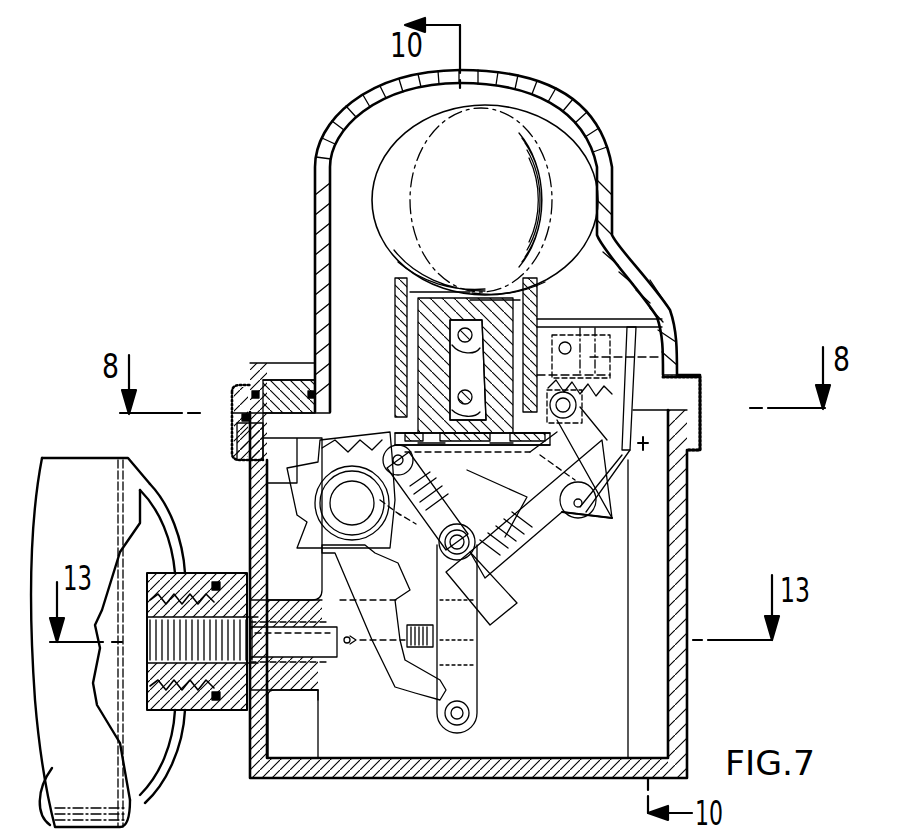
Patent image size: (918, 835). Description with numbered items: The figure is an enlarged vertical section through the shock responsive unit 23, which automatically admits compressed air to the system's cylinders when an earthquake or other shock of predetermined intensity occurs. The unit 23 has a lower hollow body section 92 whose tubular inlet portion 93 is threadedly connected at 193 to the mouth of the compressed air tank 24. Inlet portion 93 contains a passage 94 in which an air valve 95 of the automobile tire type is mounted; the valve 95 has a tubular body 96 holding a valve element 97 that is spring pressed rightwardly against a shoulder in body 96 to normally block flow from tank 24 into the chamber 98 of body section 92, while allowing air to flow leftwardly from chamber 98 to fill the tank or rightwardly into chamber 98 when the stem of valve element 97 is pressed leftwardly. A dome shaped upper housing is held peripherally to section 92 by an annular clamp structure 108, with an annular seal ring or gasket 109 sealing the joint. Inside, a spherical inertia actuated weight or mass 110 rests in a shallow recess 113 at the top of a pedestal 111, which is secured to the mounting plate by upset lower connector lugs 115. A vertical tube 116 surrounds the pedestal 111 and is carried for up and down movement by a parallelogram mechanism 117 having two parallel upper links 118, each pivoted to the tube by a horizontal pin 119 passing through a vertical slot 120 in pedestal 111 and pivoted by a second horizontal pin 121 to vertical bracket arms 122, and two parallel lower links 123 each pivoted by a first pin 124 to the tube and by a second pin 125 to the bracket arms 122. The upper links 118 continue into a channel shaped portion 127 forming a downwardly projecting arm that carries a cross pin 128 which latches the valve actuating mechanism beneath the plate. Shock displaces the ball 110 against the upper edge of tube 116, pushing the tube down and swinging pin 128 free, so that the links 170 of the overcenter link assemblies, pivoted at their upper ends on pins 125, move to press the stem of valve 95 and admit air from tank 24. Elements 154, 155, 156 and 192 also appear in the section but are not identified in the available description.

The shock responsive unit 23 is at (650, 233).
The compressed air tank 24 is at (66, 460).
The lower hollow body section 92 is at (678, 527).
The tubular inlet portion 93 is at (210, 575).
The passage 94 is at (292, 665).
The air valve 95 is at (302, 665).
The tubular body 96 is at (300, 620).
The valve element 97 is at (348, 645).
The chamber 98 is at (667, 698).
The annular clamp structure 108 is at (235, 400).
The annular seal ring or gasket 109 is at (245, 420).
The inertia actuated weight or mass 110 is at (380, 186).
The pedestal 111 is at (442, 296).
The shallow recess 113 is at (503, 296).
The lower connector lugs 115 is at (490, 445).
The vertical tube 116 is at (543, 302).
The parallelogram mechanism 117 is at (630, 310).
The upper links 118 is at (552, 330).
The horizontal pin 119 is at (415, 325).
The vertical slot 120 is at (425, 340).
The second parallel horizontal pin 121 is at (575, 348).
The vertical bracket arms 122 is at (660, 355).
The lower links 123 is at (455, 378).
The first pin 124 is at (458, 400).
The second pin 125 is at (585, 410).
The channel shaped portion 127 is at (640, 390).
The cross pin 128 is at (572, 505).
The cam roller 154 is at (341, 490).
The pivot pin 155 is at (408, 462).
The link arm 156 is at (424, 501).
The link 170 is at (488, 532).
The spring seat 192 is at (295, 378).
The threaded connection 193 is at (196, 712).